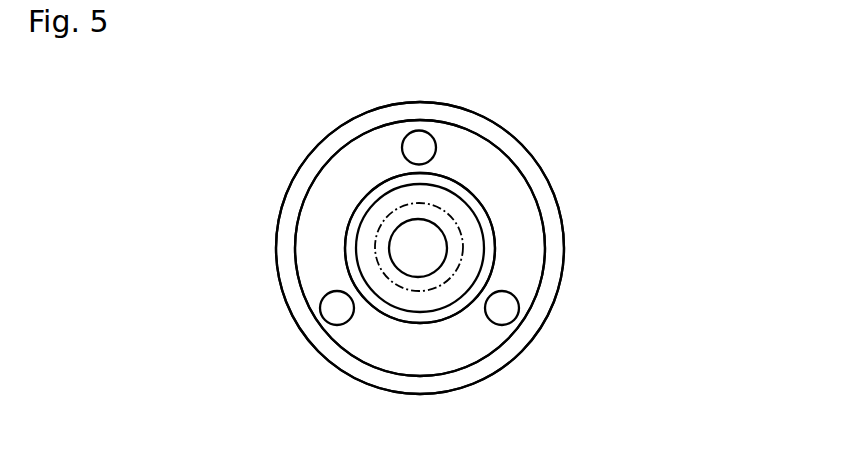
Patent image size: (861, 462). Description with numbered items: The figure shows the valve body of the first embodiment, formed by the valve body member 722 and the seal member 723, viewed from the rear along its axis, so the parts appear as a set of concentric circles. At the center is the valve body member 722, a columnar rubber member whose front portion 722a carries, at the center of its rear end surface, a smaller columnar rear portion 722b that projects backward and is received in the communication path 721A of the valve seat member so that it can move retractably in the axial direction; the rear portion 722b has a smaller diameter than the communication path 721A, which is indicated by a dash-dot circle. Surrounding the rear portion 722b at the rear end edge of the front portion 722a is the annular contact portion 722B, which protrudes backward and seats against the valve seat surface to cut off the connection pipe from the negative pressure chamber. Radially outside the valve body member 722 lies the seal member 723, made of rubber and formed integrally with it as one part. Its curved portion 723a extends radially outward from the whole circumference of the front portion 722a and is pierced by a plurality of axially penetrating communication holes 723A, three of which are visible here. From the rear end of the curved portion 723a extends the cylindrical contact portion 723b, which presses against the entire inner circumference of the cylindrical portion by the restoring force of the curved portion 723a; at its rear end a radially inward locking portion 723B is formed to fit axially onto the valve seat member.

The communication path 721A is at (418, 292).
The valve body member 722 is at (171, 167).
The front portion 722a is at (368, 240).
The rear portion 722b is at (405, 249).
The contact portion 722B is at (360, 208).
The seal member 723 is at (667, 153).
The curved portion 723a is at (512, 228).
The contact portion 723b is at (556, 240).
The communication holes 723A is at (427, 131).
The locking portion 723B is at (502, 145).